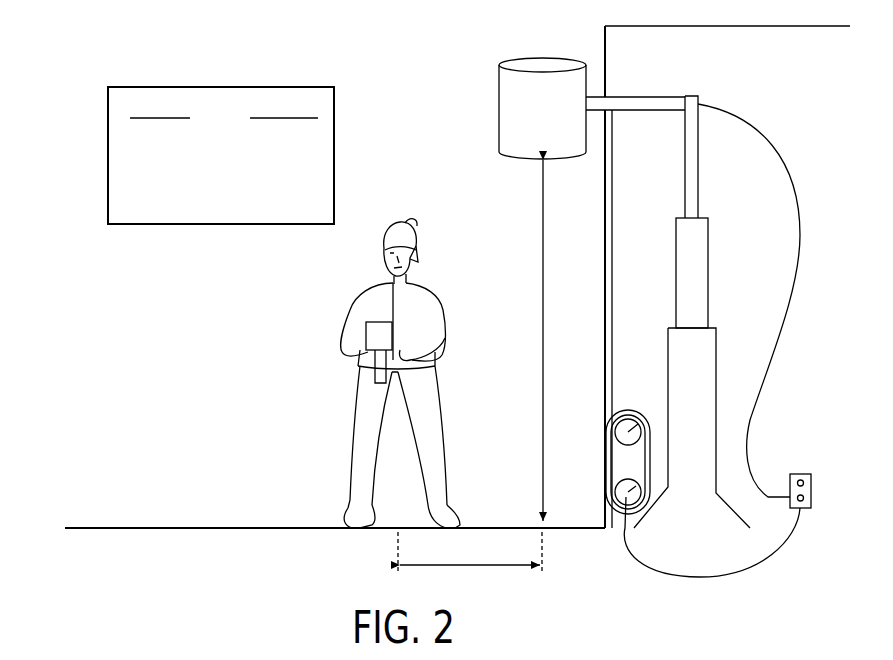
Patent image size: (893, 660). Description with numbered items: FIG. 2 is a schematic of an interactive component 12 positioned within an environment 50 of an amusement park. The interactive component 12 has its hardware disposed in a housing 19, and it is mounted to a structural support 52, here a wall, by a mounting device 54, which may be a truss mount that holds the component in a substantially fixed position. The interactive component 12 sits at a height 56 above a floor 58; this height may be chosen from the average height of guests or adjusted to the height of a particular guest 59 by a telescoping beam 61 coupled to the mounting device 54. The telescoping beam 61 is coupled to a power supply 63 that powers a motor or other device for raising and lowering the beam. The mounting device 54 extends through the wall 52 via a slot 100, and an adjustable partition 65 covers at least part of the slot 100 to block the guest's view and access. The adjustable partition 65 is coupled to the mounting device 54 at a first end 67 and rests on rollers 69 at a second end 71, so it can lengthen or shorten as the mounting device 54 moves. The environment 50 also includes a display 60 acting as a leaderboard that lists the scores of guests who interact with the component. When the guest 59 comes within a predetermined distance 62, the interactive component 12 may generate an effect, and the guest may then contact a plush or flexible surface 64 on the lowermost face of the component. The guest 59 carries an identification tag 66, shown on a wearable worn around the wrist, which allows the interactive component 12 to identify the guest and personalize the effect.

The environment 50 is at (124, 48).
The display 60 is at (222, 87).
The floor 58 is at (503, 527).
The structural support 52 is at (613, 246).
The adjustable partition 65 is at (613, 303).
The slot 100 is at (592, 307).
The interactive component 12 is at (517, 108).
The housing 19 is at (540, 62).
The surface 64 is at (522, 160).
The mounting device 54 is at (597, 112).
The first end 67 is at (618, 116).
The height 56 is at (542, 341).
The predetermined distance 62 is at (470, 566).
The telescoping beam 61 is at (717, 391).
The second end 71 is at (627, 466).
The rollers 69 is at (648, 480).
The power supply 63 is at (811, 488).
The guest 59 is at (430, 285).
The identification tag 66 is at (410, 380).